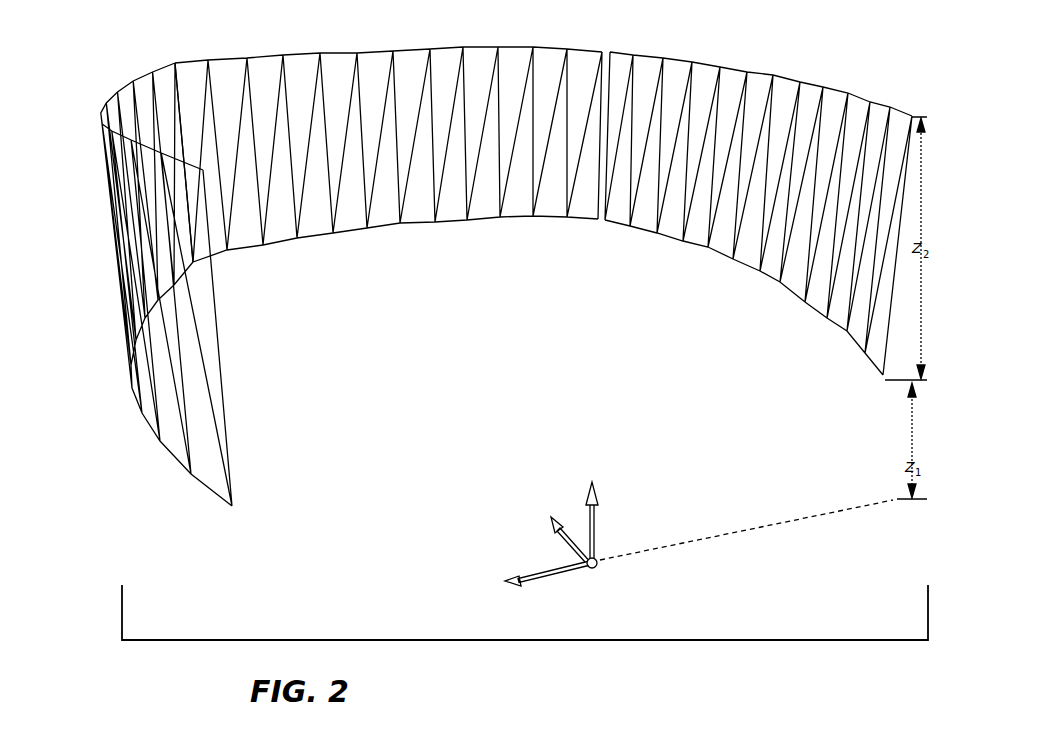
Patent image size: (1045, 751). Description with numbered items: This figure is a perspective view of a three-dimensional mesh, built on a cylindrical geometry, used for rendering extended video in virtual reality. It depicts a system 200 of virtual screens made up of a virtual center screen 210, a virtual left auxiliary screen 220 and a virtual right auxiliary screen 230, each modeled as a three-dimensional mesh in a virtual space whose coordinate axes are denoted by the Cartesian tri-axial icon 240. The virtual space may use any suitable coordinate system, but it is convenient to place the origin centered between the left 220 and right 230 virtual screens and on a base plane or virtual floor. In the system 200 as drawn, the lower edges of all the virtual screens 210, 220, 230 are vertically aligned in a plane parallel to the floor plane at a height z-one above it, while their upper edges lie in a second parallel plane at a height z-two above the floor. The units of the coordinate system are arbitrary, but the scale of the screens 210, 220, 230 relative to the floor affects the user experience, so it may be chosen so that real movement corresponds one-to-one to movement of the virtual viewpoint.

The system of virtual screens 200 is at (578, 646).
The virtual center screen 210 is at (344, 50).
The virtual left auxiliary screen 220 is at (106, 100).
The virtual right auxiliary screen 230 is at (703, 60).
The Cartesian tri-axial icon 240 is at (598, 531).